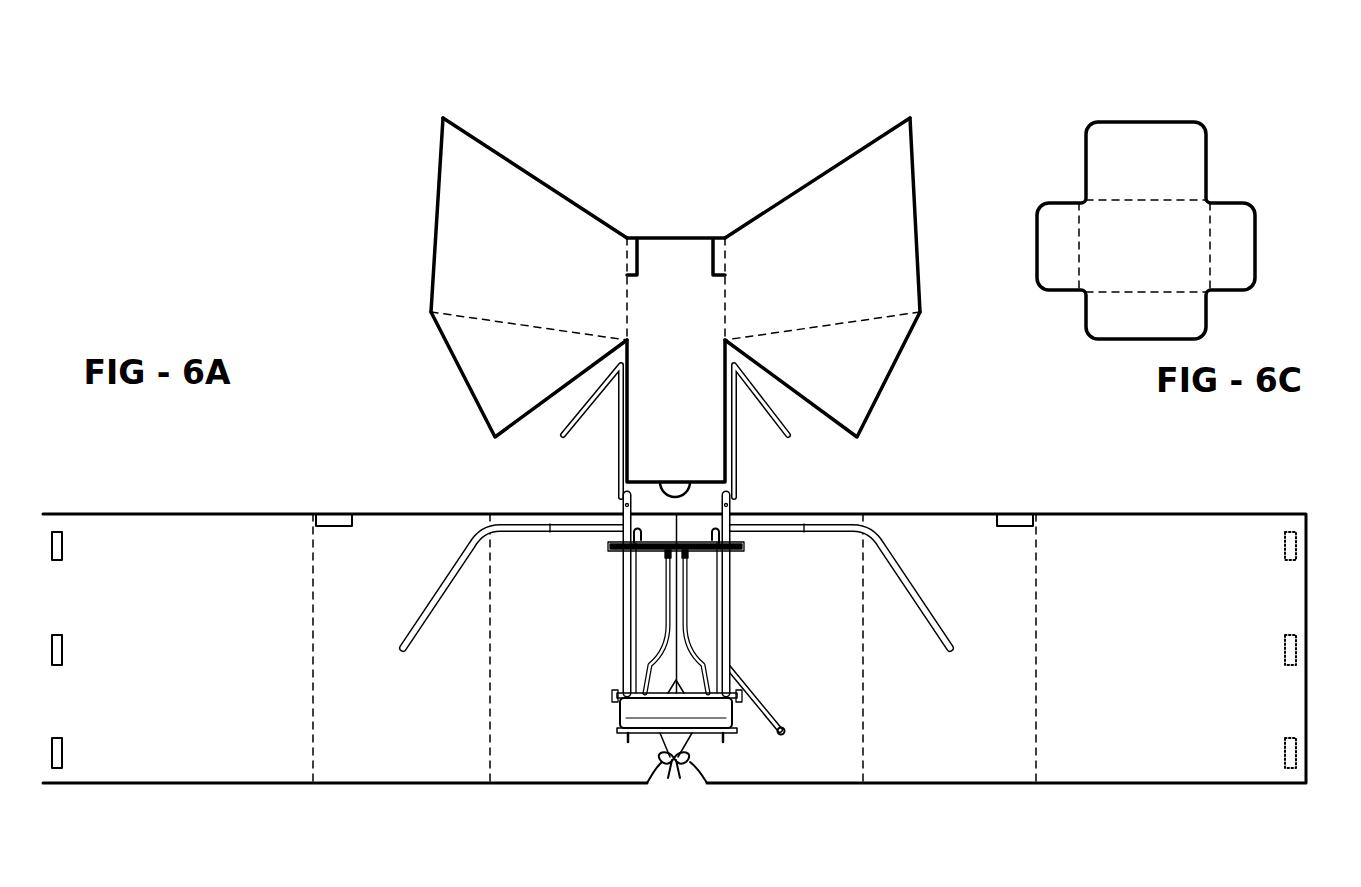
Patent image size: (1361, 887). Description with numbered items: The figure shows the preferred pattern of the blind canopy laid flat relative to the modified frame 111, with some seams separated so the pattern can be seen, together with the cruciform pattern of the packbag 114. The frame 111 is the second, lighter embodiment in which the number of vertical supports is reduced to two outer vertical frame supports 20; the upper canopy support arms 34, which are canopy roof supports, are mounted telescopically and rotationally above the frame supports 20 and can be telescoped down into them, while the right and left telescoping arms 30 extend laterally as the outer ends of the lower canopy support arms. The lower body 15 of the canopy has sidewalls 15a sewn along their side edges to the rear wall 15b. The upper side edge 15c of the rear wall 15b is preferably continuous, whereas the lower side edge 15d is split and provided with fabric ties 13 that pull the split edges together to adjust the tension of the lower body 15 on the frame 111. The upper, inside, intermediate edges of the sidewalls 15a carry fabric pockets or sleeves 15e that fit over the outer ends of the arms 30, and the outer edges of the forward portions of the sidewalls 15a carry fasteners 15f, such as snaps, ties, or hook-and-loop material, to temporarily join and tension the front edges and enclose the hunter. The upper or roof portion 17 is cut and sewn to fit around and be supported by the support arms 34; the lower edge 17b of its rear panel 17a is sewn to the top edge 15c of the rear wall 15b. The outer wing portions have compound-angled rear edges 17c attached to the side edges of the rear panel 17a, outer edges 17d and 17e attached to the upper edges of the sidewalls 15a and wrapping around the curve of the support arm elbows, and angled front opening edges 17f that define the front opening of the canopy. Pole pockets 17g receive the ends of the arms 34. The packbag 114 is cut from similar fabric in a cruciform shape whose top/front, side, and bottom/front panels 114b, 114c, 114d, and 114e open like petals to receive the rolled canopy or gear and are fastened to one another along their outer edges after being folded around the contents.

In FIG. 6A, the fabric ties 13 is at (683, 770).
In FIG. 6A, the lower body of canopy 15 is at (1318, 622).
In FIG. 6A, the sidewalls 15a is at (260, 530).
In FIG. 6A, the rear wall 15b is at (540, 770).
In FIG. 6A, the upper side edge of rear wall 15c is at (758, 513).
In FIG. 6A, the lower side edge of rear wall 15d is at (602, 787).
In FIG. 6A, the fabric pockets or sleeves 15e is at (333, 520).
In FIG. 6A, the fasteners 15f is at (62, 546).
In FIG. 6A, the upper or roof portion of canopy 17 is at (930, 140).
In FIG. 6A, the rear panel 17a is at (661, 413).
In FIG. 6A, the lower edge of rear panel 17b is at (668, 497).
In FIG. 6A, the compound-angled rear edges 17c is at (578, 383).
In FIG. 6A, the outer edge of wing portion 17d is at (453, 356).
In FIG. 6A, the outer edge of wing portion 17e is at (436, 232).
In FIG. 6A, the angled front opening edges 17f is at (557, 190).
In FIG. 6A, the pole pockets 17g is at (720, 238).
In FIG. 6A, the outer vertical frame supports 20 is at (623, 625).
In FIG. 6A, the telescoping arms 30 is at (412, 623).
In FIG. 6A, the upper canopy support arms 34 is at (573, 413).
In FIG. 6A, the modified frame 111 is at (588, 494).
In FIG. 6C, the packbag 114 is at (1220, 102).
In FIG. 6C, the top/front panel of packbag 114b is at (1143, 133).
In FIG. 6C, the side panel of packbag 114c is at (1245, 243).
In FIG. 6C, the side panel of packbag 114d is at (1050, 233).
In FIG. 6C, the bottom/front panel of packbag 114e is at (1121, 257).